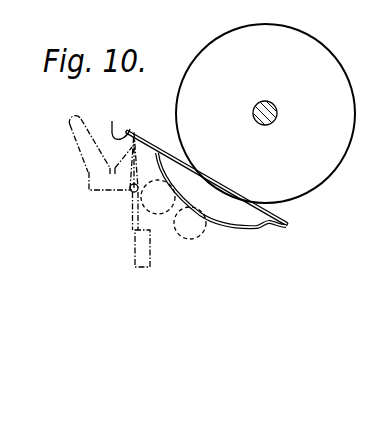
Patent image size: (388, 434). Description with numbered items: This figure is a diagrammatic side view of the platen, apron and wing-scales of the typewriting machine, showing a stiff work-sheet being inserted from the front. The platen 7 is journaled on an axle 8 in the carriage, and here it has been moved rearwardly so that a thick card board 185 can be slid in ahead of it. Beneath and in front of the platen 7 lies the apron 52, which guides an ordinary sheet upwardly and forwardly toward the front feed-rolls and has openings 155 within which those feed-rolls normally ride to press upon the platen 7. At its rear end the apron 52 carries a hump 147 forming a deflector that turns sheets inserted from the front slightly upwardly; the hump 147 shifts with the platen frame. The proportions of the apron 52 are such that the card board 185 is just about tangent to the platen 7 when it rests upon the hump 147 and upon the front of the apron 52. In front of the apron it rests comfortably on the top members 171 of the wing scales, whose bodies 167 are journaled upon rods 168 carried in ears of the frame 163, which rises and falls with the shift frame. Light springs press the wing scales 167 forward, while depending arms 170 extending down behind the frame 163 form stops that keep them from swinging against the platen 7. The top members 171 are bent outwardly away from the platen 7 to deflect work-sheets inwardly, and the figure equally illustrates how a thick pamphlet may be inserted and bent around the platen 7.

The platen 7 is at (265, 113).
The axle 8 is at (277, 109).
The apron 52 is at (237, 229).
The hump 147 is at (271, 228).
The openings 155 is at (191, 199).
The frame 163 is at (90, 160).
The wing scale body 167 is at (137, 163).
The pivot rod 168 is at (131, 191).
The depending arm 170 is at (131, 218).
The top member 171 is at (116, 119).
The card board 185 is at (141, 141).